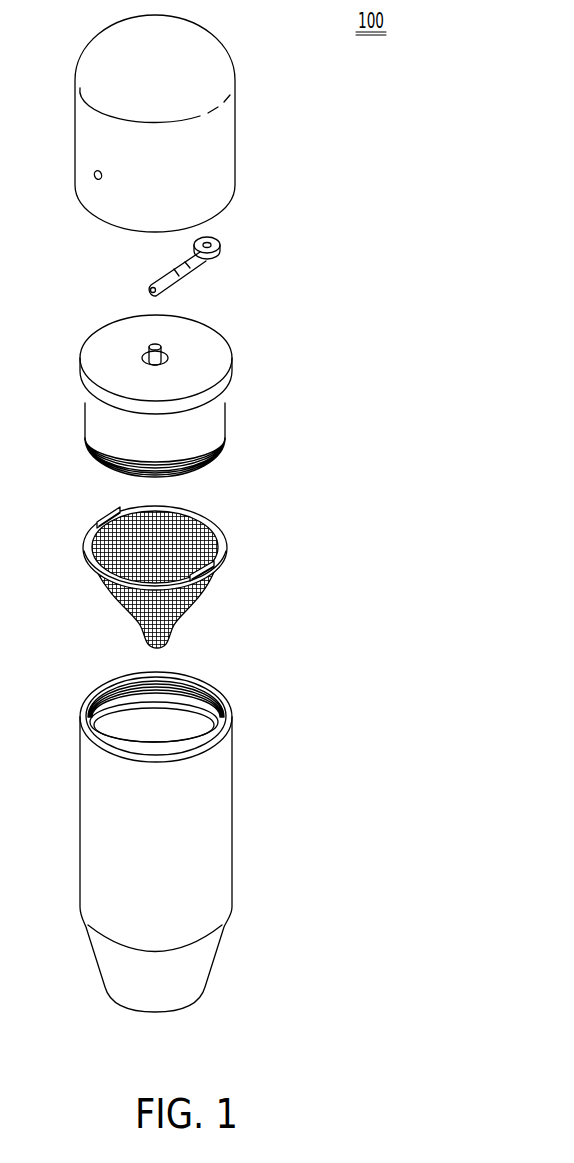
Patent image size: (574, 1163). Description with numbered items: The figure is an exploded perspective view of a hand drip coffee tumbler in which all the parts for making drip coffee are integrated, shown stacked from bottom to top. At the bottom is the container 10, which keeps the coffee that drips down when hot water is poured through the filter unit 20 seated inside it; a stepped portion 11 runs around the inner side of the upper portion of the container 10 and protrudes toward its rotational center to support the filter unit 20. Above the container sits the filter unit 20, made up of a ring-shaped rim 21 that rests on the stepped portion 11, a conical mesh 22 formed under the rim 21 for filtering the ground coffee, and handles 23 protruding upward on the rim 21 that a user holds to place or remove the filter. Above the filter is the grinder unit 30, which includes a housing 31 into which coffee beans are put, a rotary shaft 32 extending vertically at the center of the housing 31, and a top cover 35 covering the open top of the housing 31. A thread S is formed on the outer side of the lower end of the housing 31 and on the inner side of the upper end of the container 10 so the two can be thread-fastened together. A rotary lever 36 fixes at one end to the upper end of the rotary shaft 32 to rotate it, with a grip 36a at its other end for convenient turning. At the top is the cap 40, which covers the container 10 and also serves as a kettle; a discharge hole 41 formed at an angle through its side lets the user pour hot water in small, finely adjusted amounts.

The container 10 is at (197, 831).
The stepped portion 11 is at (115, 714).
The filter unit 20 is at (161, 559).
The rim 21 is at (86, 546).
The mesh 22 is at (120, 600).
The handles 23 is at (105, 515).
The grinder unit 30 is at (169, 368).
The housing 31 is at (86, 406).
The rotary shaft 32 is at (161, 346).
The top cover 35 is at (97, 338).
The rotary lever 36 is at (198, 264).
The grip 36a is at (221, 247).
The cap 40 is at (164, 123).
The discharge hole 41 is at (93, 176).
The thread S is at (226, 456).